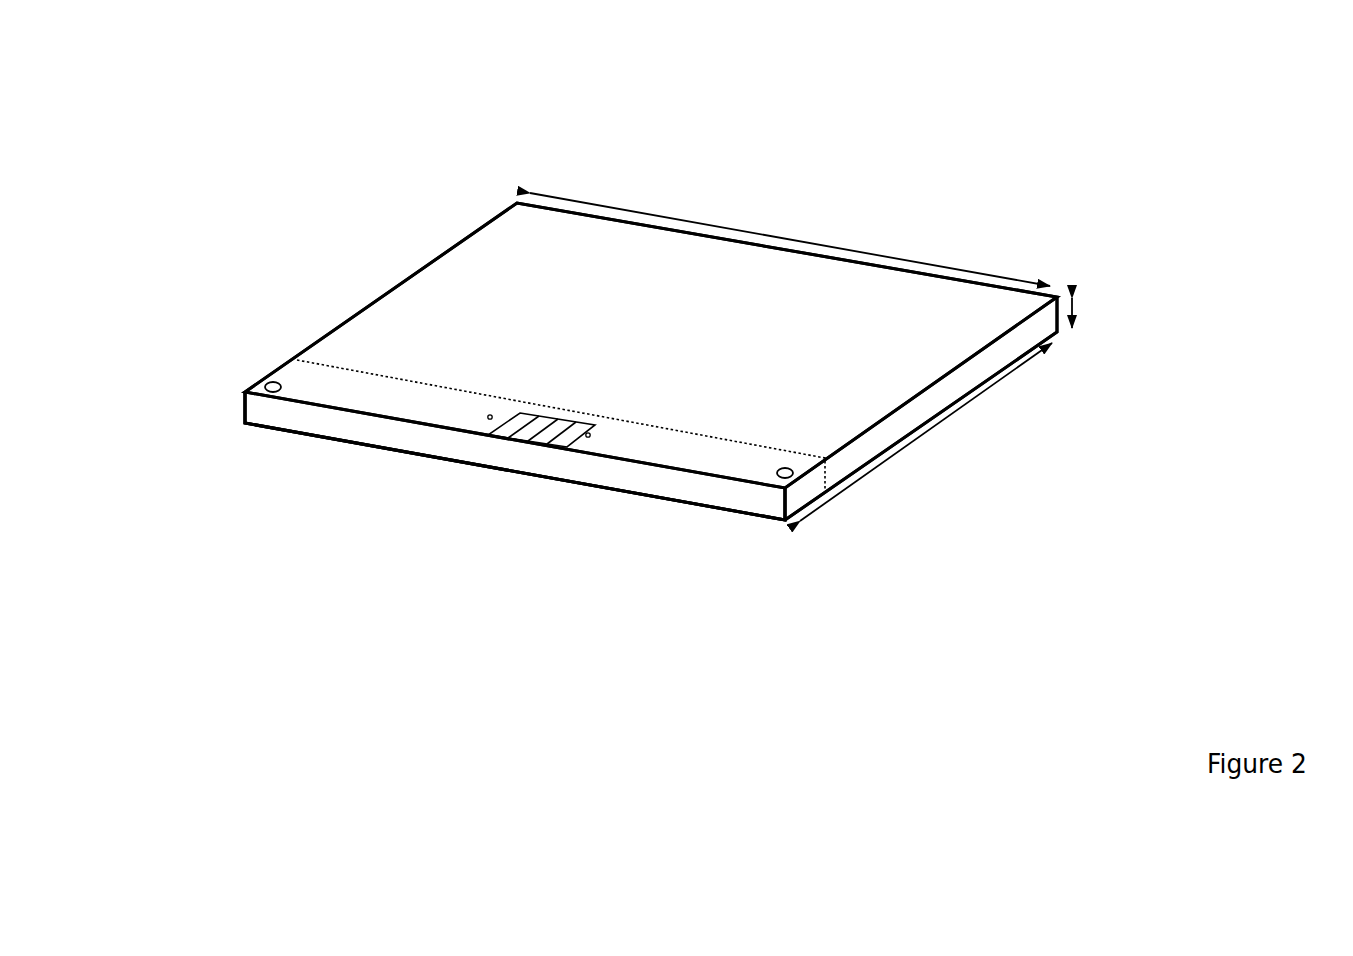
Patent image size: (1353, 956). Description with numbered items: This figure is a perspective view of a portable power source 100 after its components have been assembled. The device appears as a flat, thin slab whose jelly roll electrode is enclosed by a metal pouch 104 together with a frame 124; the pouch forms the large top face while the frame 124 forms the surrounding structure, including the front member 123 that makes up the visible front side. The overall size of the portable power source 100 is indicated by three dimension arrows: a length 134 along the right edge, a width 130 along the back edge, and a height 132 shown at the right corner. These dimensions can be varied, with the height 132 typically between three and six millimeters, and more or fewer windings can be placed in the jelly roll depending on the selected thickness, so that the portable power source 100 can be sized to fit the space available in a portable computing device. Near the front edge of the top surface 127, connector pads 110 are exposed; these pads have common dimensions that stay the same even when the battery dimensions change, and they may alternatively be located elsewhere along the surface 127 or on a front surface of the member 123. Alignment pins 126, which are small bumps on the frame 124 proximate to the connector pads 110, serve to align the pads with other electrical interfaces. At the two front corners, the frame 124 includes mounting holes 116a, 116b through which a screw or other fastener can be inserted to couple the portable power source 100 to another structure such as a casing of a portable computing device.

The portable power source 100 is at (940, 77).
The metal pouch 104 is at (484, 273).
The connector pads 110 is at (527, 430).
The mounting hole 116a is at (262, 382).
The mounting hole 116b is at (802, 487).
The front member 123 is at (412, 440).
The frame 124 is at (795, 492).
The alignment pins 126 is at (492, 420).
The surface 127 is at (320, 388).
The width 130 is at (818, 245).
The height 132 is at (1075, 300).
The length 134 is at (1013, 365).